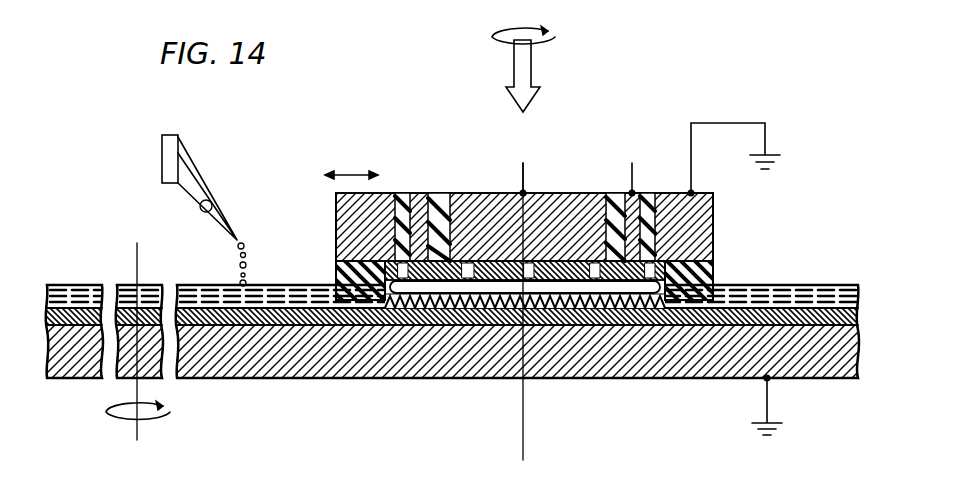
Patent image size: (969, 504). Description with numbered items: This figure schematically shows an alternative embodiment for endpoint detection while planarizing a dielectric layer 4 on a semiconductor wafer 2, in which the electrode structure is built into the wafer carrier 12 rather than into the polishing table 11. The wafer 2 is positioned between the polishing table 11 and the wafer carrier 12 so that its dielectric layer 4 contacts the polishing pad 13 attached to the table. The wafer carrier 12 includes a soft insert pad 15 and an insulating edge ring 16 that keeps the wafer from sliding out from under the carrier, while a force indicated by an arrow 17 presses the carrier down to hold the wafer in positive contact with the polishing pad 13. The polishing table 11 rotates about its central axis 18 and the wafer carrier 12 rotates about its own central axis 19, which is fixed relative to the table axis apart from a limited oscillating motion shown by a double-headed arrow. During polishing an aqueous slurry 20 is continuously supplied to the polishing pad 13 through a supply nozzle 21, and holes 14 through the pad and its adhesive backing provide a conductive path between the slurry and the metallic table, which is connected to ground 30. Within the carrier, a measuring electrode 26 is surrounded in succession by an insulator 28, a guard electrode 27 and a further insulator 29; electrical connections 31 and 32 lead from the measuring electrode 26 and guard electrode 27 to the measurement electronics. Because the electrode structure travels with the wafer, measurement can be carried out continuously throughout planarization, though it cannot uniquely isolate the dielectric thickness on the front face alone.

The semiconductor wafer 2 is at (618, 298).
The dielectric layer 4 is at (553, 302).
The polishing table 11 is at (372, 393).
The wafer carrier 12 is at (713, 215).
The polishing pad 13 is at (245, 378).
The holes 14 is at (470, 230).
The insert pad 15 is at (562, 193).
The insulating edge ring 16 is at (713, 258).
The arrow indicating applied force 17 is at (533, 75).
The central axis of polishing table 18 is at (135, 255).
The central axis of wafer carrier 19 is at (520, 432).
The aqueous slurry 20 is at (790, 285).
The supply nozzle 21 is at (158, 160).
The measuring electrode 26 is at (487, 193).
The guard electrode 27 is at (425, 193).
The insulator 28 is at (615, 193).
The insulator 29 is at (397, 193).
The ground 30 is at (760, 393).
The electrical connection 31 is at (527, 193).
The electrical connection 32 is at (641, 193).